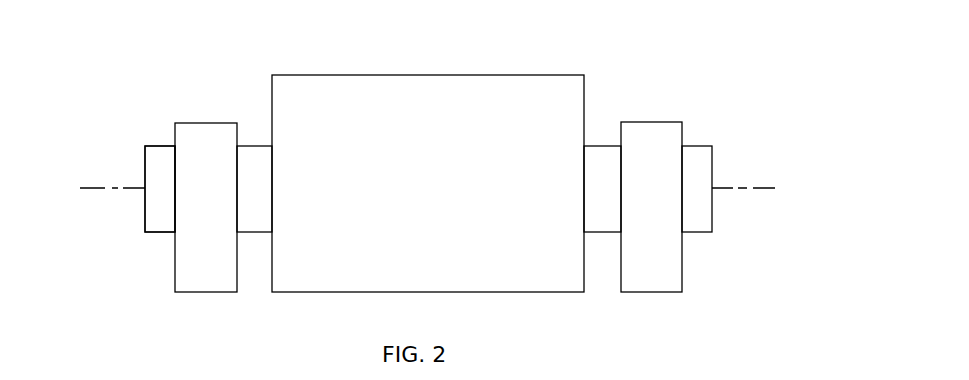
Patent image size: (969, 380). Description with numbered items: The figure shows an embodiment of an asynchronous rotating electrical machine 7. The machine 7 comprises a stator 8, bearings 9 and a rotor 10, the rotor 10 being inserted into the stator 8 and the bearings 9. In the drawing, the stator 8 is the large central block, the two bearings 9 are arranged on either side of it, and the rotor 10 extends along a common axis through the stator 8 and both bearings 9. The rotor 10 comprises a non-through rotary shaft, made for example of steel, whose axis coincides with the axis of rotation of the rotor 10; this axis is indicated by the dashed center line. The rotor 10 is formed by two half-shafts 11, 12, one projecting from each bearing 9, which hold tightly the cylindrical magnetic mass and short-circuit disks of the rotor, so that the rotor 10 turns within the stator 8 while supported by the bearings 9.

The asynchronous rotating electrical machine 7 is at (447, 153).
The stator 8 is at (449, 65).
The bearings 9 is at (201, 117).
The rotor 10 is at (158, 132).
The half-shaft 11 is at (167, 240).
The half-shaft 12 is at (700, 238).